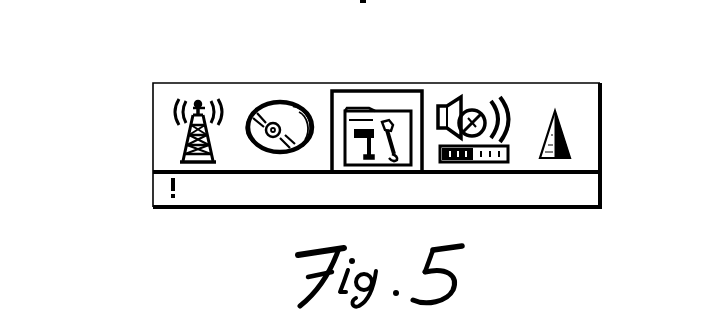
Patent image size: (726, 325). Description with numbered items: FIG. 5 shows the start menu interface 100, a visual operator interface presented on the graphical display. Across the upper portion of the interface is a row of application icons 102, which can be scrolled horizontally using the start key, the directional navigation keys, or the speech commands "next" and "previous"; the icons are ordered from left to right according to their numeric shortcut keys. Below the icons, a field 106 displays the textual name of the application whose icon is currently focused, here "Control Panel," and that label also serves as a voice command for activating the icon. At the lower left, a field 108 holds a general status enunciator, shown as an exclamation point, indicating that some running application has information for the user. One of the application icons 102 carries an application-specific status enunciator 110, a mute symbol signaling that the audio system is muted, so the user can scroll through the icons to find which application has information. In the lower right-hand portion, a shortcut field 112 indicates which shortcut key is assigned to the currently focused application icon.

The start menu interface 100 is at (167, 79).
The application icons 102 is at (207, 98).
The field 106 is at (463, 189).
The field 108 is at (167, 188).
The application-specific status enunciator 110 is at (477, 102).
The shortcut field 112 is at (588, 194).